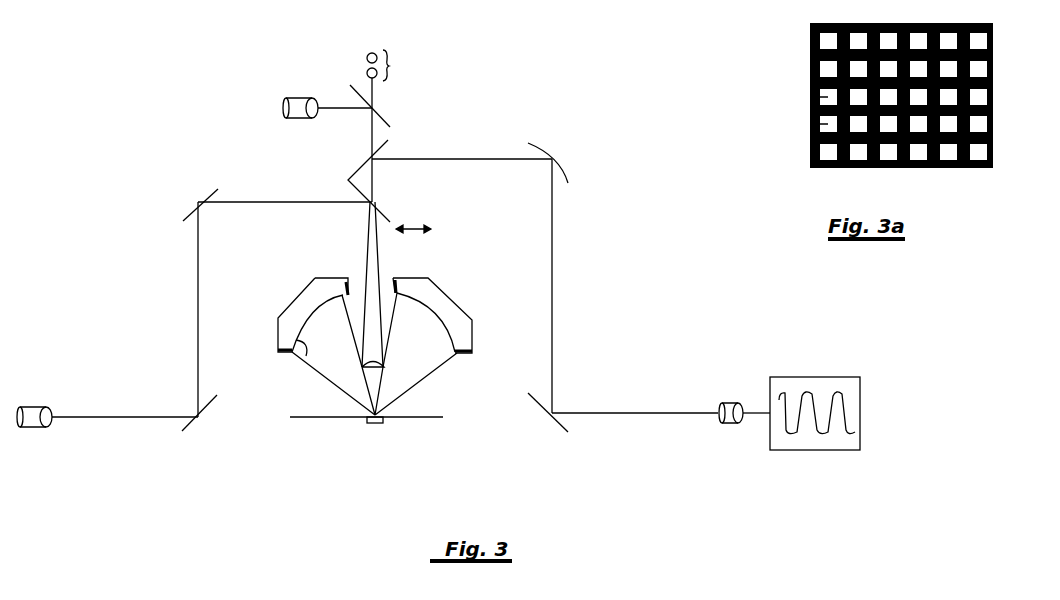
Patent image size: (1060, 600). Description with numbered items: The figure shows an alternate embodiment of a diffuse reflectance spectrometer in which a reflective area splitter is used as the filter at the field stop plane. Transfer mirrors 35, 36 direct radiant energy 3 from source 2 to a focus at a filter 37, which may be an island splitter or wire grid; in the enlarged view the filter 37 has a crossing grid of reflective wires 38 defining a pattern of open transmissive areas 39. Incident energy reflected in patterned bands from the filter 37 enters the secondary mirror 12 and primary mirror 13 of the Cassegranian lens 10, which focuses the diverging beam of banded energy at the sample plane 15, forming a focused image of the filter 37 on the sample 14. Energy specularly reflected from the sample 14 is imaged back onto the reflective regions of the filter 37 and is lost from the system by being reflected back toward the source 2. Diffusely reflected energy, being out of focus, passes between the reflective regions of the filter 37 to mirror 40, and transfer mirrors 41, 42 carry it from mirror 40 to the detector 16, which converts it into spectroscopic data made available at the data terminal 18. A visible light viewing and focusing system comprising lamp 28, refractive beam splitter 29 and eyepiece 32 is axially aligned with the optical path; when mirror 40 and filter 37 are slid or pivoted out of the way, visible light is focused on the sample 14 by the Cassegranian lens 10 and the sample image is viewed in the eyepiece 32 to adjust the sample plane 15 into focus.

In FIG. 3, the source 2 is at (35, 408).
In FIG. 3, the radiant energy 3 is at (116, 420).
In FIG. 3, the Cassegranian lens 10 is at (302, 288).
In FIG. 3, the secondary mirror 12 is at (378, 369).
In FIG. 3, the primary mirror 13 is at (303, 360).
In FIG. 3, the sample 14 is at (378, 424).
In FIG. 3, the sample plane 15 is at (328, 420).
In FIG. 3, the detector 16 is at (728, 403).
In FIG. 3, the data terminal 18 is at (828, 377).
In FIG. 3, the lamp 28 is at (306, 98).
In FIG. 3, the refractive beam splitter 29 is at (378, 116).
In FIG. 3, the eyepiece 32 is at (392, 65).
In FIG. 3, the transfer mirror 35 is at (196, 425).
In FIG. 3, the transfer mirror 36 is at (210, 190).
In FIG. 3, the filter 37 is at (390, 216).
In FIG. 3a, the filter 37 is at (810, 65).
In FIG. 3a, the reflective wires 38 is at (993, 100).
In FIG. 3a, the open transmissive areas 39 is at (826, 124).
In FIG. 3, the mirror 40 is at (384, 146).
In FIG. 3, the transfer mirror 41 is at (568, 182).
In FIG. 3, the transfer mirror 42 is at (560, 418).